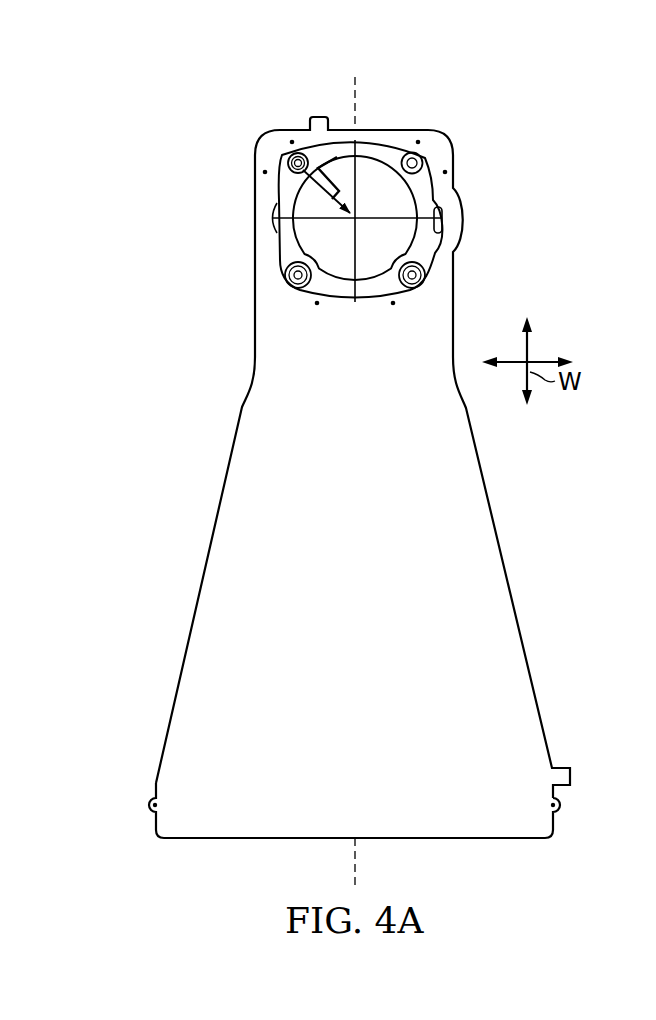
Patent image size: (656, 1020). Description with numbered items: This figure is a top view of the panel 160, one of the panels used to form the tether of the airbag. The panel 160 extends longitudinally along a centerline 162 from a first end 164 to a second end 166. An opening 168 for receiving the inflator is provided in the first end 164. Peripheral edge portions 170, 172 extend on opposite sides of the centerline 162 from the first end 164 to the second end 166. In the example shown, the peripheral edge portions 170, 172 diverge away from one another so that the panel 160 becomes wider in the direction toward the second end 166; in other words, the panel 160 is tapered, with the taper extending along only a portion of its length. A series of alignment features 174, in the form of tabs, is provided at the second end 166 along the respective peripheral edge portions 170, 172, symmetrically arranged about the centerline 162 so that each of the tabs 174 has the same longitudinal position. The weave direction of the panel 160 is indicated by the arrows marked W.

The panel 160 is at (292, 99).
The centerline 162 is at (357, 95).
The first end 164 is at (472, 140).
The second end 166 is at (511, 849).
The opening 168 is at (293, 157).
The peripheral edge portion 170 is at (202, 577).
The peripheral edge portion 172 is at (507, 575).
The alignment features 174 is at (152, 806).